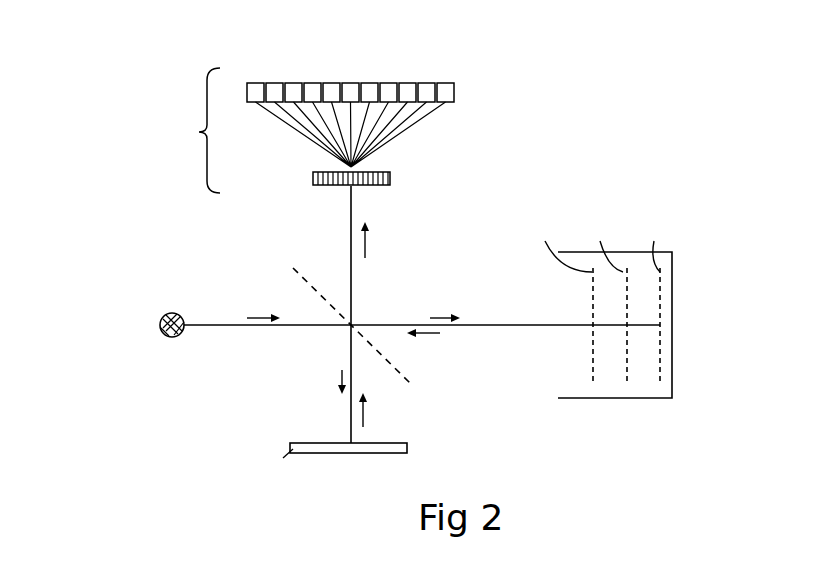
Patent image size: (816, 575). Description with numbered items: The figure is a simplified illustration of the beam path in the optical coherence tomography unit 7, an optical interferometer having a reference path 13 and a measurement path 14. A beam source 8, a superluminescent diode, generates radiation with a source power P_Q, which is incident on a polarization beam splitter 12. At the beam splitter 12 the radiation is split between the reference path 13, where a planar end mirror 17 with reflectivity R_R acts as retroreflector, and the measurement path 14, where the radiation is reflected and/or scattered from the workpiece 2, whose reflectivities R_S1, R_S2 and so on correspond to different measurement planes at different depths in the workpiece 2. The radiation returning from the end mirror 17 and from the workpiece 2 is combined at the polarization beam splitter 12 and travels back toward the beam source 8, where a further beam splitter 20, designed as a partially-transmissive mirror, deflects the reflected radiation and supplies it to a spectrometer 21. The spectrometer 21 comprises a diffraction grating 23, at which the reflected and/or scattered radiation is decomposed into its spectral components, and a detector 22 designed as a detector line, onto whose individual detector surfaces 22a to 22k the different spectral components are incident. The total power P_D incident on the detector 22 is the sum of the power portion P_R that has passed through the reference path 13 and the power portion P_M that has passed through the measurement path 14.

The workpiece 2 is at (603, 400).
The optical coherence tomography unit 7 is at (568, 122).
The beam source 8 is at (160, 324).
The polarization beam splitter 12 is at (315, 287).
The further beam splitter 20 is at (351, 325).
The reference path 13 is at (347, 418).
The measurement path 14 is at (517, 323).
The end mirror 17 is at (323, 455).
The spectrometer 21 is at (343, 100).
The detector 22 is at (457, 63).
The detector surface 22a is at (257, 82).
The detector surface 22k is at (447, 82).
The diffraction grating 23 is at (313, 177).